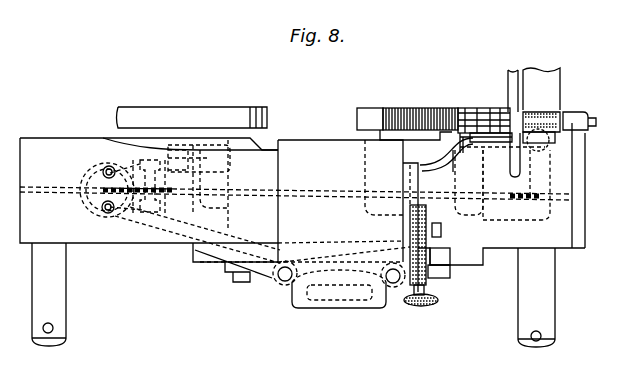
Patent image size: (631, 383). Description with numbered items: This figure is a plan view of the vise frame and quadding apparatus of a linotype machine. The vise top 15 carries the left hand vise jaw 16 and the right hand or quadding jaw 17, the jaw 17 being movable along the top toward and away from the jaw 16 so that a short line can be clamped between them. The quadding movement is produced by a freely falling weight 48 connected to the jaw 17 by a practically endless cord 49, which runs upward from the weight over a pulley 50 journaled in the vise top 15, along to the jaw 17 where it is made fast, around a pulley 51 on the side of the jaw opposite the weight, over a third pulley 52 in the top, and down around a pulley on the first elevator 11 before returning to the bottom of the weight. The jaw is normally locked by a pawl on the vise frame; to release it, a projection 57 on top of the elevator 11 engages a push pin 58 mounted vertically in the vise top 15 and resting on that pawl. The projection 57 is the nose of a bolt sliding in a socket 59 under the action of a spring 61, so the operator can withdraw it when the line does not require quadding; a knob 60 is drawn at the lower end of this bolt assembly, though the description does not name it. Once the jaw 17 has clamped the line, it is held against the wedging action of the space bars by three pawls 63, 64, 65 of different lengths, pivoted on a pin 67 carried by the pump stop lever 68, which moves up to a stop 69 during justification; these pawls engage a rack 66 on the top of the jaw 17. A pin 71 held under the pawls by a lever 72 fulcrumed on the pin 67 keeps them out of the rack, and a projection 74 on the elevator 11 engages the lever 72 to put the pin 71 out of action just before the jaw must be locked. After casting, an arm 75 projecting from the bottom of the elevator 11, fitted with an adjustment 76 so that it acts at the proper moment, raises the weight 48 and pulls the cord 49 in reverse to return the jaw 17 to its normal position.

The first elevator 11 is at (278, 223).
The vise top 15 is at (52, 228).
The left hand vise jaw 16 is at (192, 118).
The right hand vise jaw 17 is at (380, 124).
The weight 48 is at (97, 210).
The cord 49 is at (342, 192).
The pulley 50 is at (120, 165).
The pulley 51 is at (536, 197).
The third pulley 52 is at (170, 185).
The projection 57 is at (434, 212).
The push pin 58 is at (405, 233).
The socket 59 is at (432, 258).
The knob 60 is at (430, 304).
The spring 61 is at (440, 283).
The pawl 63 is at (485, 123).
The pawl 64 is at (467, 117).
The pawl 65 is at (490, 127).
The rack 66 is at (420, 108).
The pin 67 is at (510, 108).
The pump stop lever 68 is at (517, 70).
The stop 69 is at (588, 120).
The pin 71 is at (478, 108).
The lever 72 is at (448, 198).
The projection 74 is at (403, 178).
The arm 75 is at (196, 250).
The adjustment 76 is at (100, 177).